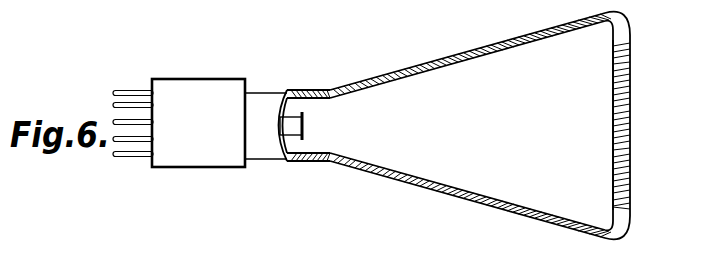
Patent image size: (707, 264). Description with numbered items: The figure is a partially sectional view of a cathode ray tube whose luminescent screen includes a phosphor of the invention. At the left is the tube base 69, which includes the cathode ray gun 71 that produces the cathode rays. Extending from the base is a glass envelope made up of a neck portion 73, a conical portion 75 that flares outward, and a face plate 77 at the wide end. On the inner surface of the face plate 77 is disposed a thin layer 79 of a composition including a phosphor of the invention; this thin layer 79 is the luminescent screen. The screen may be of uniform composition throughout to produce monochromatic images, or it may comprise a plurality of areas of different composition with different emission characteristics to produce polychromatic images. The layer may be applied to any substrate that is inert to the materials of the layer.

The tube base 69 is at (212, 62).
The cathode ray gun 71 is at (308, 140).
The neck portion 73 is at (402, 70).
The conical portion 75 is at (500, 212).
The face plate 77 is at (632, 107).
The thin layer 79 is at (612, 123).